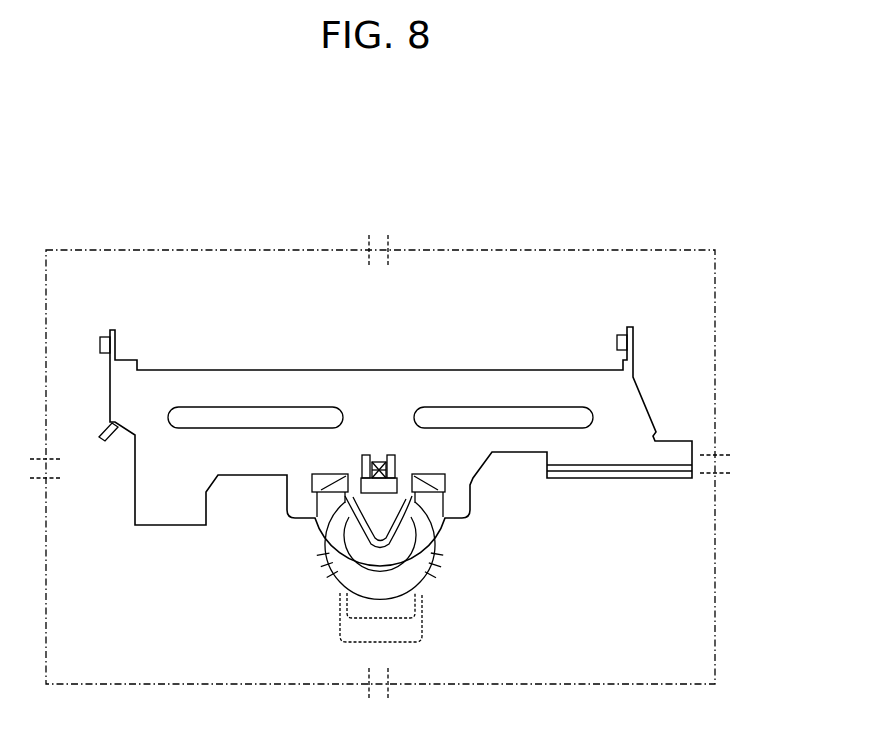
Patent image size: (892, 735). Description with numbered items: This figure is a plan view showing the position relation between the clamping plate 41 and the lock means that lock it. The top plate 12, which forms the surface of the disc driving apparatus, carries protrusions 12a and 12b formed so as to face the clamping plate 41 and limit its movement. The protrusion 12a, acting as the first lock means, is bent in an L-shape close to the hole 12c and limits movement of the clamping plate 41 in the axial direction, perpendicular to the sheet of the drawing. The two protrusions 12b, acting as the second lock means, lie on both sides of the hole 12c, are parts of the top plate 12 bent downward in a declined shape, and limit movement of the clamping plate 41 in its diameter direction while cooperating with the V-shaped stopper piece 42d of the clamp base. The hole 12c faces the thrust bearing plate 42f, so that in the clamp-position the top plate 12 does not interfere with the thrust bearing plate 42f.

The top plate 12 is at (692, 563).
The protrusion 12a is at (420, 617).
The protrusions 12b is at (313, 573).
The hole 12c is at (356, 466).
The clamping plate 41 is at (426, 533).
The stopper piece 42d is at (380, 454).
The thrust bearing plate 42f is at (313, 525).